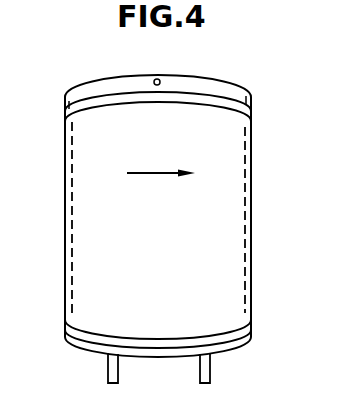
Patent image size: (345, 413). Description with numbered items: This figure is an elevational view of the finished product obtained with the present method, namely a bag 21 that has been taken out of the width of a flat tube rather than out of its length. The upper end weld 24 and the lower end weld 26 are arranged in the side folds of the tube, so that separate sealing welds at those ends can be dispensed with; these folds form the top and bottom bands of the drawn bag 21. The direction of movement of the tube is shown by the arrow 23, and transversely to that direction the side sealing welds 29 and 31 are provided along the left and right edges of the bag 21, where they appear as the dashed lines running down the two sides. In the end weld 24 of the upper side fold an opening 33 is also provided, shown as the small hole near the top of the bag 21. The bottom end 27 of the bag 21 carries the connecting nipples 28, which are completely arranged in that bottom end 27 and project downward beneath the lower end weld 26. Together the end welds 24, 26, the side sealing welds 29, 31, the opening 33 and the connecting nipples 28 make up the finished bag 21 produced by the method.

The bag 21 is at (167, 274).
The arrow 23 is at (161, 164).
The upper end weld 24 is at (236, 85).
The lower end weld 26 is at (235, 346).
The bottom end 27 is at (143, 357).
The connecting nipples 28 is at (110, 367).
The side sealing weld 29 is at (67, 227).
The side sealing weld 31 is at (249, 223).
The opening 33 is at (160, 80).